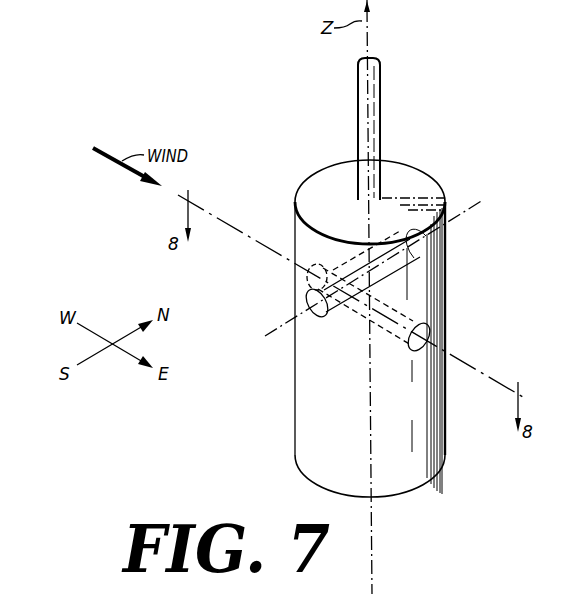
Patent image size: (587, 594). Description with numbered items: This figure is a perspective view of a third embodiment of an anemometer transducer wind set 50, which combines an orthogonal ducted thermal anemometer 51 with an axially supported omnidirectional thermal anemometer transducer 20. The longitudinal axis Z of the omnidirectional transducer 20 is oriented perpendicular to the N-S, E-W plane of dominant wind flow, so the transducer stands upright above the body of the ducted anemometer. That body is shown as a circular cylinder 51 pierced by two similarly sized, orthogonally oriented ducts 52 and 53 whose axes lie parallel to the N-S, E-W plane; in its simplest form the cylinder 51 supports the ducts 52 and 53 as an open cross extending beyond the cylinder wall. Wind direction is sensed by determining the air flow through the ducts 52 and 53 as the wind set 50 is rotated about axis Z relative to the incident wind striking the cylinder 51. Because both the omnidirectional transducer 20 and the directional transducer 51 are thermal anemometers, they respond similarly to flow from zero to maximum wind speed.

The omnidirectional thermal anemometer transducer 20 is at (382, 73).
The anemometer transducer wind set 50 is at (447, 400).
The orthogonal ducted thermal anemometer 51 is at (330, 418).
The duct 52 is at (307, 303).
The duct 53 is at (443, 336).